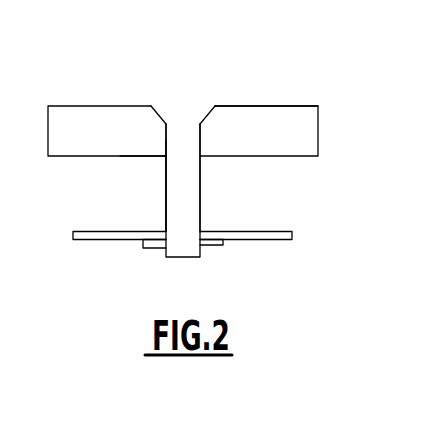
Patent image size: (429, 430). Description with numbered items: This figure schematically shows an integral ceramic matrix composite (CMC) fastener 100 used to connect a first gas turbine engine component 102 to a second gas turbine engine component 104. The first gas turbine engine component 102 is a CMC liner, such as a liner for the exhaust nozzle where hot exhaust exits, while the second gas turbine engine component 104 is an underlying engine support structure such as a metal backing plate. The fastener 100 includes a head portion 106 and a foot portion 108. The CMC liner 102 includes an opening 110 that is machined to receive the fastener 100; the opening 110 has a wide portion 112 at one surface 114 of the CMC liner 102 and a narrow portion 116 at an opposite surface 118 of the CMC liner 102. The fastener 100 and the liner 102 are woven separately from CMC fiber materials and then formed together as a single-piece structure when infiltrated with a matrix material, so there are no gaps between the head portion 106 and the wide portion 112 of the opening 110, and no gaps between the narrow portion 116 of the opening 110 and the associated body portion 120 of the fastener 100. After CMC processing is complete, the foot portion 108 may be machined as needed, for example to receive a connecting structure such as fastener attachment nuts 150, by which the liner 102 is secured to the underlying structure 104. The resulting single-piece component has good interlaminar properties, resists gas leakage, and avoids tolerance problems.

The integral ceramic matrix composite fastener 100 is at (222, 161).
The first gas turbine engine component 102 is at (307, 135).
The second gas turbine engine component 104 is at (293, 235).
The head portion 106 is at (165, 116).
The foot portion 108 is at (177, 258).
The opening 110 is at (216, 137).
The wide portion 112 is at (215, 107).
The one surface 114 is at (301, 106).
The narrow portion 116 is at (165, 141).
The opposite surface 118 is at (161, 157).
The body portion 120 is at (181, 148).
The fastener attachment nut 150 is at (224, 245).